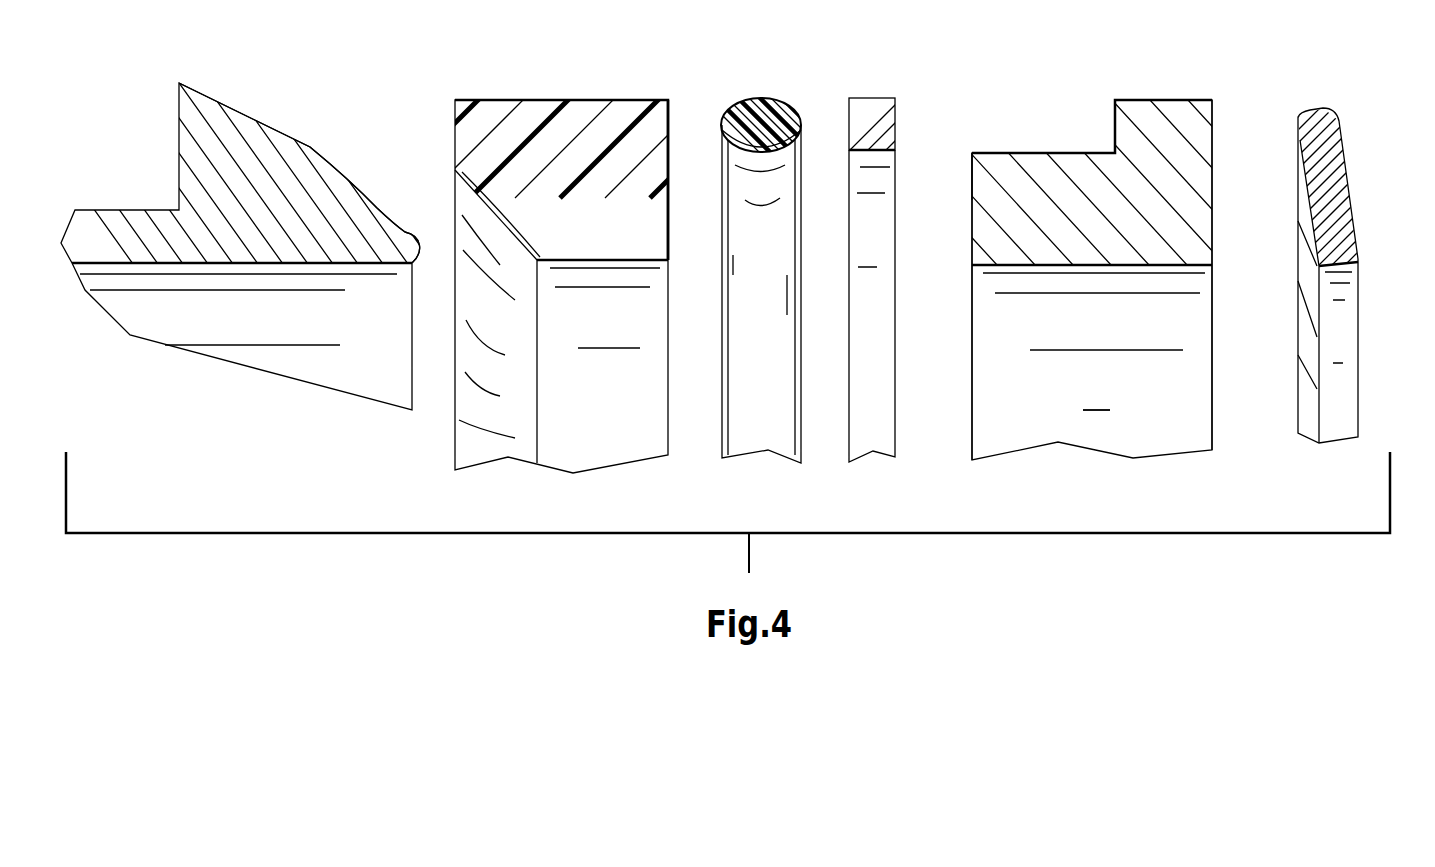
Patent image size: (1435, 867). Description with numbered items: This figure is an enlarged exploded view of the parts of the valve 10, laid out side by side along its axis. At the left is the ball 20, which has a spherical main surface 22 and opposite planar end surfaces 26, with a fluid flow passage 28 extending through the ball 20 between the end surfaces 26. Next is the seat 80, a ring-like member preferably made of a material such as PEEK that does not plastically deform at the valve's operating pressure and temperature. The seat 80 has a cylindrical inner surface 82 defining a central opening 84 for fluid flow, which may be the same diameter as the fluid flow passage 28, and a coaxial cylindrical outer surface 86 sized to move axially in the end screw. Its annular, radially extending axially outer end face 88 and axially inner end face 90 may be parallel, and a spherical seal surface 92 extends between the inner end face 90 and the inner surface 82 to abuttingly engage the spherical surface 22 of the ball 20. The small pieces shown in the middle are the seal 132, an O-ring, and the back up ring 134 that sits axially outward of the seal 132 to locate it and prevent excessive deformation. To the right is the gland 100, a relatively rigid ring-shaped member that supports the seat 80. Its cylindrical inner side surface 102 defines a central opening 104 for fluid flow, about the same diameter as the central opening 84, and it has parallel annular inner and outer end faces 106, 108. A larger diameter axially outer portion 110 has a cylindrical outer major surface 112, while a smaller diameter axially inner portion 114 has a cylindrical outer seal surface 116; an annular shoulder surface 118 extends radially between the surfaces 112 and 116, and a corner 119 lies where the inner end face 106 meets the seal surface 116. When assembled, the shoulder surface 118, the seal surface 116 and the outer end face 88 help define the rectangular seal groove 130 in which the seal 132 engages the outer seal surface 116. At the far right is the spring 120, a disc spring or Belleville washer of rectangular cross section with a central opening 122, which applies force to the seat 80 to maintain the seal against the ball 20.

The valve 10 is at (522, 570).
The ball 20 is at (202, 410).
The spherical main surface 22 is at (288, 127).
The planar end surfaces 26 is at (412, 243).
The fluid flow passage 28 is at (303, 339).
The seat 80 is at (436, 462).
The cylindrical inner surface 82 is at (607, 262).
The central opening 84 is at (575, 416).
The cylindrical outer surface 86 is at (592, 97).
The axially outer end face 88 is at (670, 123).
The axially inner end face 90 is at (455, 102).
The seal surface 92 is at (465, 187).
The gland 100 is at (1060, 468).
The inner side surface 102 is at (1097, 265).
The central opening 104 is at (1078, 395).
The axially inner end face 106 is at (972, 220).
The axially outer end face 108 is at (1212, 213).
The axially outer portion 110 is at (1177, 140).
The outer major surface 112 is at (1177, 97).
The axially inner portion 114 is at (1020, 197).
The outer seal surface 116 is at (1037, 150).
The shoulder surface 118 is at (1112, 115).
The corner 119 is at (972, 153).
The spring 120 is at (1308, 464).
The central opening 122 is at (1343, 326).
The seal groove 130 is at (1067, 133).
The seal 132 is at (755, 83).
The back up ring 134 is at (880, 83).